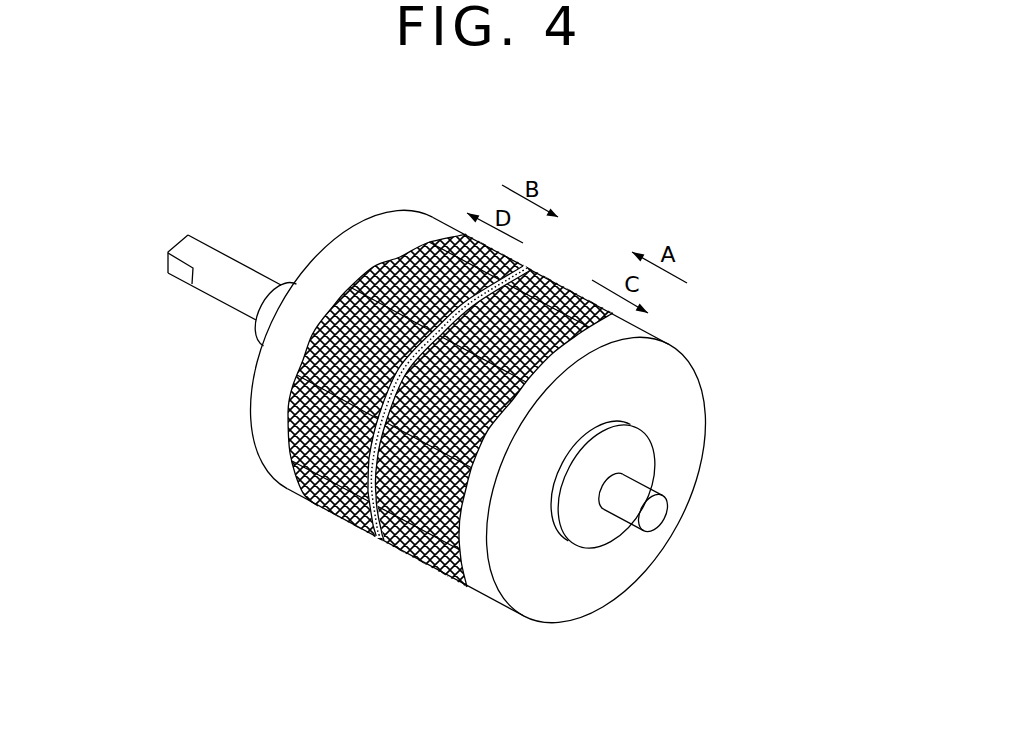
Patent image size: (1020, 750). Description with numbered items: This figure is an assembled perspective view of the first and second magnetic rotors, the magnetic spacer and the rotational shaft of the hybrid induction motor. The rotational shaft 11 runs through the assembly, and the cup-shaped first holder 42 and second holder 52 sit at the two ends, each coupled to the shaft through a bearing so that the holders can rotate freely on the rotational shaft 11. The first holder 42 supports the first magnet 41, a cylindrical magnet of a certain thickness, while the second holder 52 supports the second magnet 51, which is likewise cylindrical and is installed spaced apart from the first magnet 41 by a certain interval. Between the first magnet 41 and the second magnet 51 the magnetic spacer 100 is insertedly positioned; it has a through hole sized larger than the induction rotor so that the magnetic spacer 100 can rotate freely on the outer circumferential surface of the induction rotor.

The rotational shaft 11 is at (222, 290).
The first magnet 41 is at (428, 563).
The first holder 42 is at (475, 550).
The second magnet 51 is at (333, 500).
The second holder 52 is at (272, 441).
The magnetic spacer 100 is at (370, 530).